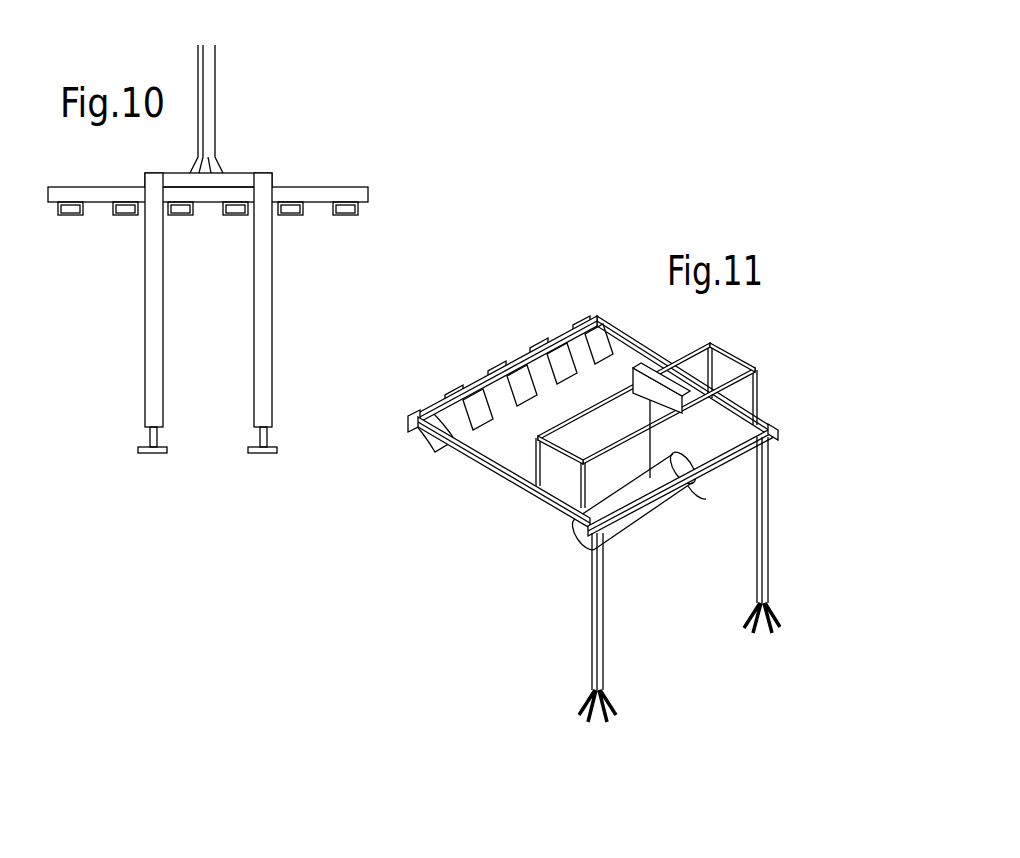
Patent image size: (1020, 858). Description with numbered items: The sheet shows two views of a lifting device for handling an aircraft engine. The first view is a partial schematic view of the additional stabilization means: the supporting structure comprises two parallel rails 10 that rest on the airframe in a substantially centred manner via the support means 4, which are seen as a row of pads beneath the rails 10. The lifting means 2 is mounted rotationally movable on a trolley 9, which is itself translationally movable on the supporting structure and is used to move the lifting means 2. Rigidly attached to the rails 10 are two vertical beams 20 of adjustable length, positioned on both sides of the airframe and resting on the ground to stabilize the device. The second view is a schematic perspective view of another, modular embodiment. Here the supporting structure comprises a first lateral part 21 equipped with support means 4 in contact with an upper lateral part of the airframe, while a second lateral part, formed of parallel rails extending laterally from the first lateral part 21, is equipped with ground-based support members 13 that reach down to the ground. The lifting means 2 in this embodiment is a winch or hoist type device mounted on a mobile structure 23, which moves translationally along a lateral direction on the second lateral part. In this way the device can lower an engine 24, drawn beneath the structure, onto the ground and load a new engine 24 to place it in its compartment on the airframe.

In FIG. 10, the lifting means 2 is at (224, 107).
In FIG. 11, the lifting means 2 is at (630, 378).
In FIG. 10, the support means 4 is at (125, 216).
In FIG. 11, the support means 4 is at (452, 393).
In FIG. 10, the trolley 9 is at (240, 172).
In FIG. 10, the rails 10 is at (347, 193).
In FIG. 10, the vertical beams 20 is at (145, 330).
In FIG. 11, the ground-based support members 13 is at (603, 625).
In FIG. 11, the first lateral part 21 is at (424, 445).
In FIG. 11, the mobile structure 23 is at (522, 458).
In FIG. 11, the engine 24 is at (648, 512).